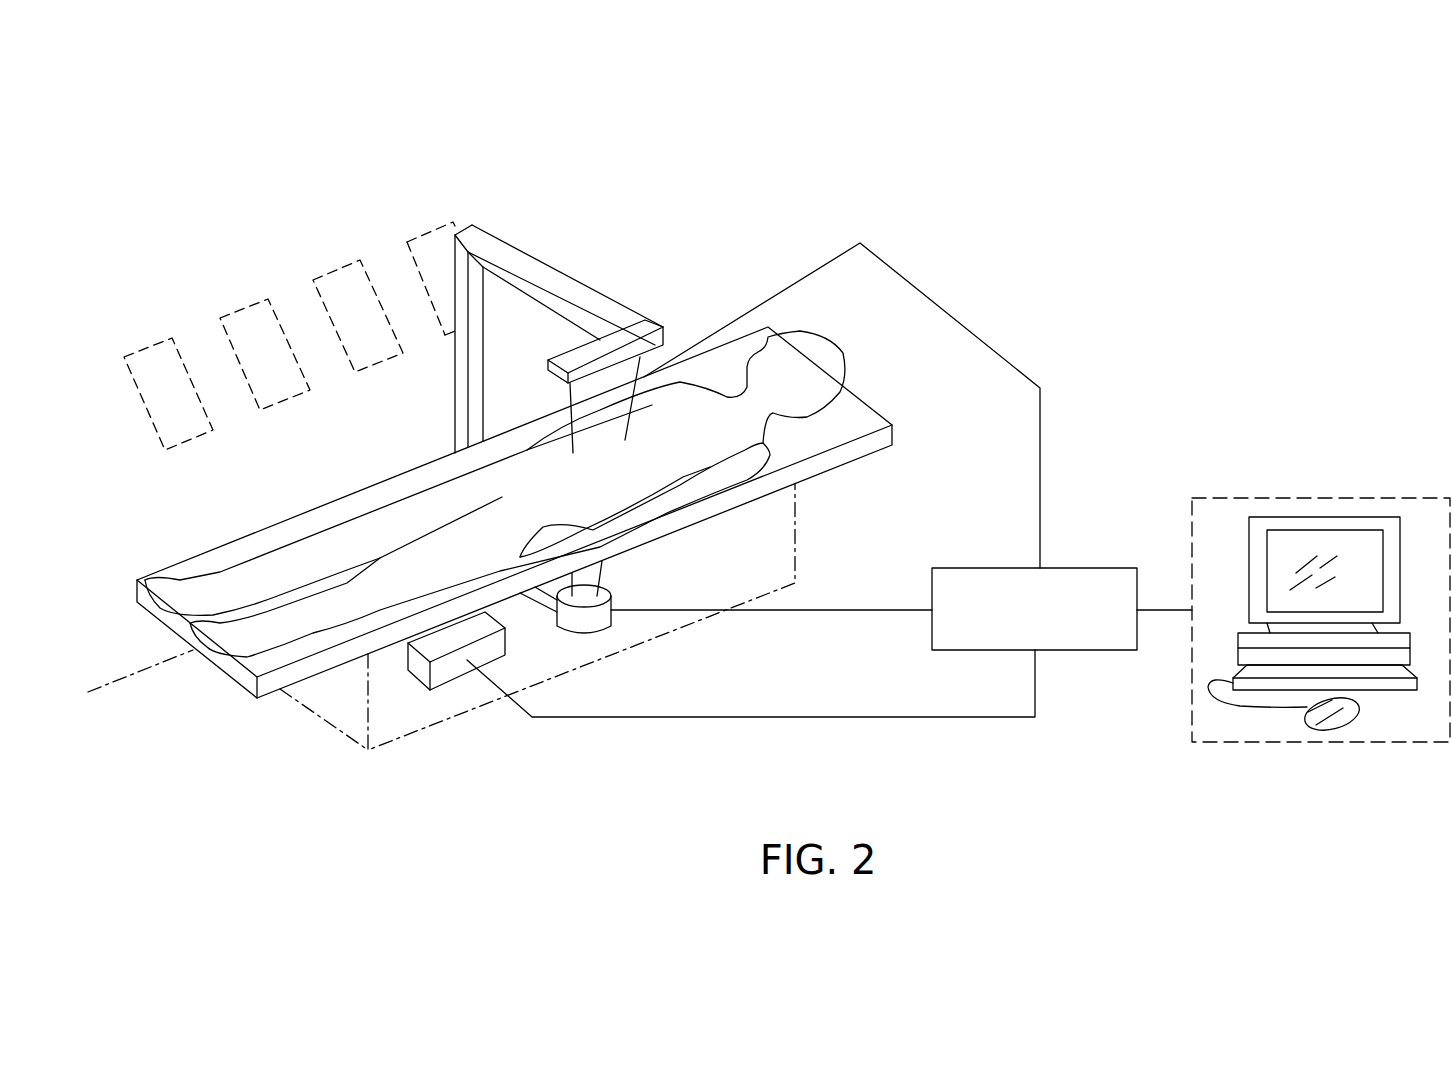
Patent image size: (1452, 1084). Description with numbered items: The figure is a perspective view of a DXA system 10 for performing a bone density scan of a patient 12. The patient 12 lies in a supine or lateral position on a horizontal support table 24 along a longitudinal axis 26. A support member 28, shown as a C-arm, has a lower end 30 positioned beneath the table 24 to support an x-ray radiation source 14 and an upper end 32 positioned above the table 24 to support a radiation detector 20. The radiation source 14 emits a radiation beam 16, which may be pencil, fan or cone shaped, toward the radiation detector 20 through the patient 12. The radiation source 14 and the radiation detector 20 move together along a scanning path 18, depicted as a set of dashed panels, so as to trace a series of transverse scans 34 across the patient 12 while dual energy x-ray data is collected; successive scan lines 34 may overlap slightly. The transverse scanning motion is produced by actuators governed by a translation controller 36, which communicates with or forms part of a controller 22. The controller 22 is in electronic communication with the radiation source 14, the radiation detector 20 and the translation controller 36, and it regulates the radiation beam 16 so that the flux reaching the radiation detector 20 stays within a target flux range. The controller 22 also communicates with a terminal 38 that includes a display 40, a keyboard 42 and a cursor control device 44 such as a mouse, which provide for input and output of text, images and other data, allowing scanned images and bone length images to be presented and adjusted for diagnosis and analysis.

The system 10 is at (858, 188).
The patient 12 is at (262, 568).
The radiation source 14 is at (600, 620).
The radiation beam 16 is at (643, 365).
The scanning path 18 is at (245, 305).
The radiation detector 20 is at (627, 325).
The controller 22 is at (1020, 626).
The patient table 24 is at (295, 678).
The longitudinal axis 26 is at (145, 672).
The support member 28 is at (495, 242).
The lower end 30 is at (540, 613).
The upper end 32 is at (540, 278).
The transverse scans 34 is at (197, 367).
The translation controller 36 is at (453, 668).
The terminal 38 is at (1293, 498).
The display 40 is at (1365, 530).
The keyboard 42 is at (1267, 688).
The cursor control device 44 is at (1353, 728).